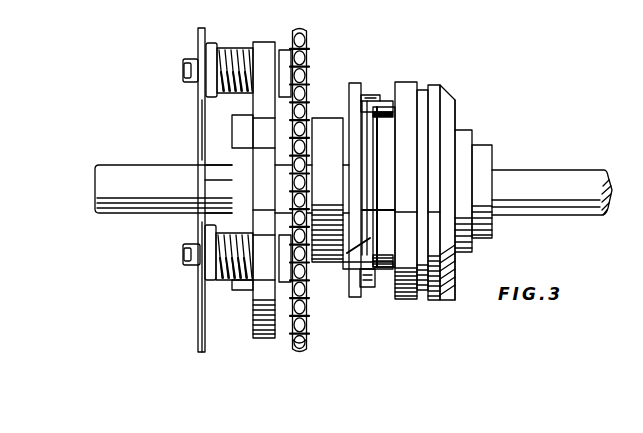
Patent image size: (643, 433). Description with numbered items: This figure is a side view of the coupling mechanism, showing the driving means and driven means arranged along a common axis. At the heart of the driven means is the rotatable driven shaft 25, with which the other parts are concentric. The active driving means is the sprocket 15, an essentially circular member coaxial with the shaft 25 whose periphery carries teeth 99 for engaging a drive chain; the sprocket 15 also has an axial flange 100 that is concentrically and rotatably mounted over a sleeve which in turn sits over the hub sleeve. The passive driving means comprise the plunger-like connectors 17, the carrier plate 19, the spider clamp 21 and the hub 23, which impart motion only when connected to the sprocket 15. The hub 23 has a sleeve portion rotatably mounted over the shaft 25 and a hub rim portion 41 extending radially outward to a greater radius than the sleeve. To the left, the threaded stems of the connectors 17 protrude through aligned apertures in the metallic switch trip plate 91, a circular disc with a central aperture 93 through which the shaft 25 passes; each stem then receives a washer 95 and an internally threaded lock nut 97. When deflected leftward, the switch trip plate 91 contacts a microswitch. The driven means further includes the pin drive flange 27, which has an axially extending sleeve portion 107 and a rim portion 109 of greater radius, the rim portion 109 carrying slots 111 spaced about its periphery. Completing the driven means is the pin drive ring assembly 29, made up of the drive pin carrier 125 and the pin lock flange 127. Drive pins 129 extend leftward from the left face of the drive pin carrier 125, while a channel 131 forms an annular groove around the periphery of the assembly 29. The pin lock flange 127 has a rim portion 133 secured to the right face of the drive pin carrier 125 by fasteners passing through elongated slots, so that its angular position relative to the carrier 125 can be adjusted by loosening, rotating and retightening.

The sprocket 15 is at (306, 36).
The plunger-like connectors 17 is at (236, 48).
The carrier plate 19 is at (263, 42).
The spider clamp 21 is at (226, 150).
The hub 23 is at (352, 83).
The rotatable driven shaft 25 is at (568, 171).
The pin drive flange 27 is at (380, 106).
The pin drive ring assembly 29 is at (444, 82).
The hub rim portion 41 is at (364, 95).
The switch trip plate 91 is at (197, 122).
The central aperture 93 is at (205, 145).
The washer 95 is at (207, 46).
The lock nut 97 is at (185, 63).
The teeth 99 is at (308, 343).
The axial flange 100 is at (328, 118).
The sleeve portion 107 is at (487, 145).
The rim portion 109 is at (342, 268).
The slots 111 is at (366, 288).
The drive pin carrier 125 is at (405, 82).
The pin lock flange 127 is at (459, 122).
The drive pins 129 is at (385, 101).
The channel 131 is at (433, 85).
The rim portion 133 is at (458, 116).